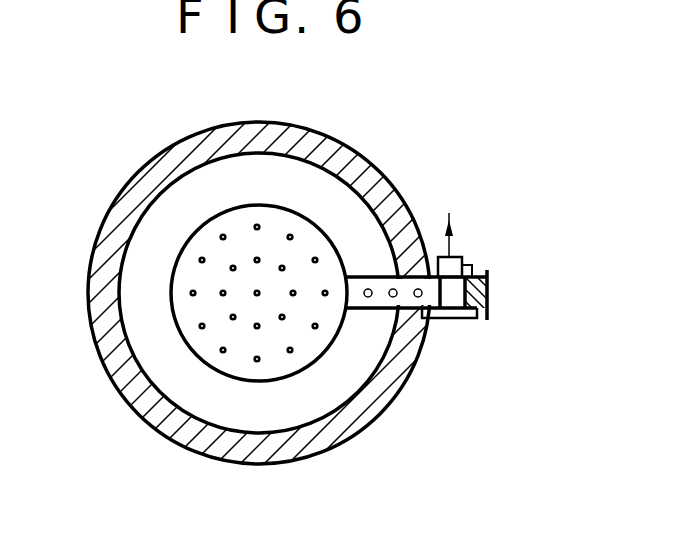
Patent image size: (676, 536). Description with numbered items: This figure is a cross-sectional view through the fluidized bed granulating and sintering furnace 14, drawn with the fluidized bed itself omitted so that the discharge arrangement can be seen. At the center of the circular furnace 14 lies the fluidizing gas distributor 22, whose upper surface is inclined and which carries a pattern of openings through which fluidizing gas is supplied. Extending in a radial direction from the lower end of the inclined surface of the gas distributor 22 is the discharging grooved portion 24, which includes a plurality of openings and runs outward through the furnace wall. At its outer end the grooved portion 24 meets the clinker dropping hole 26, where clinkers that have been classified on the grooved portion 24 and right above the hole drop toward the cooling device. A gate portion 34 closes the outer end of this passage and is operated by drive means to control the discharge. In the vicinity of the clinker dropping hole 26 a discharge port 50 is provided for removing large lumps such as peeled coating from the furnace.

The fluidized bed granulating and sintering furnace 14 is at (88, 297).
The fluidizing gas distributor 22 is at (198, 235).
The discharging grooved portion 24 is at (382, 302).
The clinker dropping hole 26 is at (450, 318).
The gate portion 34 is at (487, 320).
The discharge port for large lumps 50 is at (460, 260).